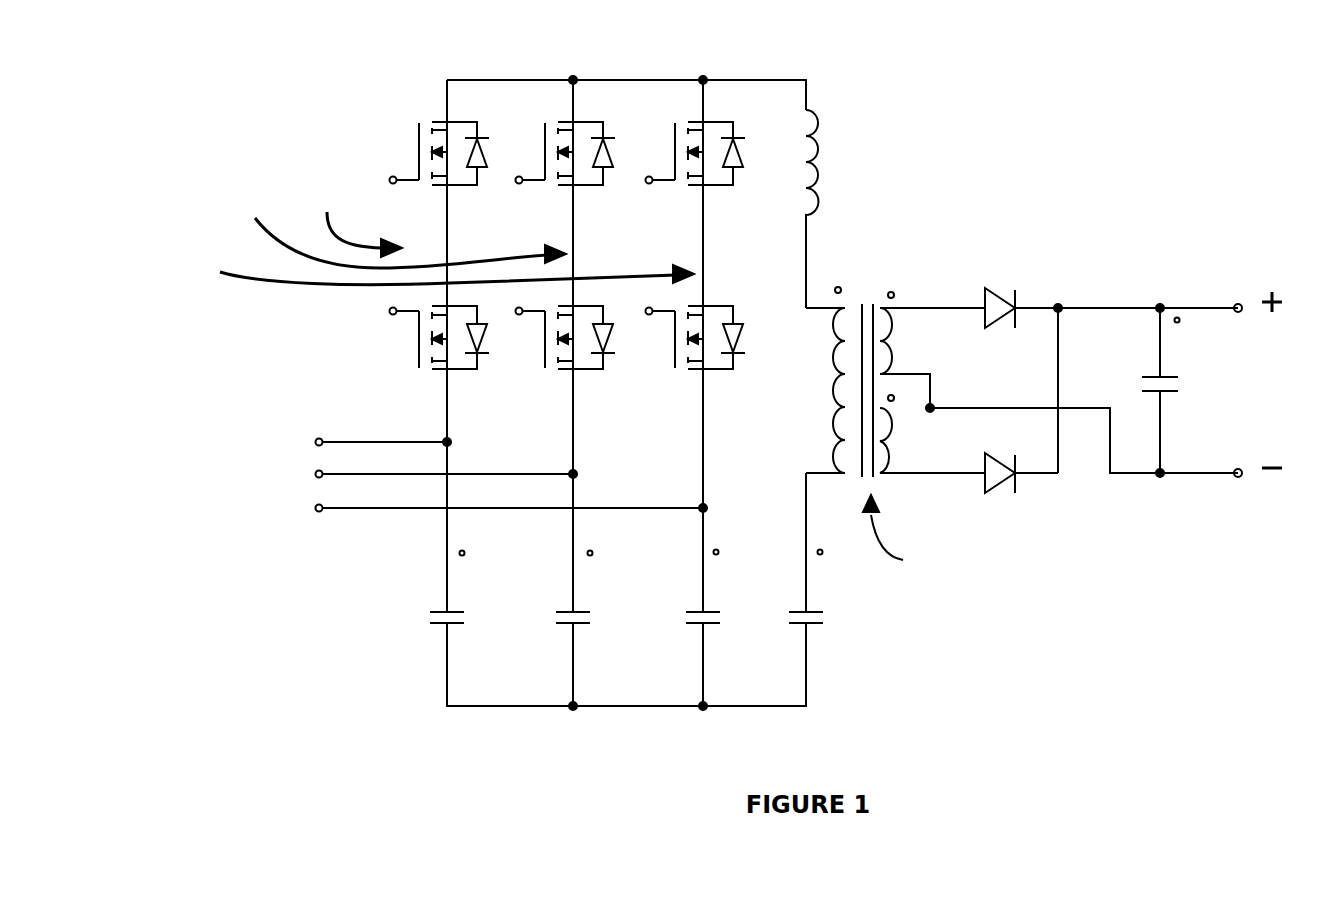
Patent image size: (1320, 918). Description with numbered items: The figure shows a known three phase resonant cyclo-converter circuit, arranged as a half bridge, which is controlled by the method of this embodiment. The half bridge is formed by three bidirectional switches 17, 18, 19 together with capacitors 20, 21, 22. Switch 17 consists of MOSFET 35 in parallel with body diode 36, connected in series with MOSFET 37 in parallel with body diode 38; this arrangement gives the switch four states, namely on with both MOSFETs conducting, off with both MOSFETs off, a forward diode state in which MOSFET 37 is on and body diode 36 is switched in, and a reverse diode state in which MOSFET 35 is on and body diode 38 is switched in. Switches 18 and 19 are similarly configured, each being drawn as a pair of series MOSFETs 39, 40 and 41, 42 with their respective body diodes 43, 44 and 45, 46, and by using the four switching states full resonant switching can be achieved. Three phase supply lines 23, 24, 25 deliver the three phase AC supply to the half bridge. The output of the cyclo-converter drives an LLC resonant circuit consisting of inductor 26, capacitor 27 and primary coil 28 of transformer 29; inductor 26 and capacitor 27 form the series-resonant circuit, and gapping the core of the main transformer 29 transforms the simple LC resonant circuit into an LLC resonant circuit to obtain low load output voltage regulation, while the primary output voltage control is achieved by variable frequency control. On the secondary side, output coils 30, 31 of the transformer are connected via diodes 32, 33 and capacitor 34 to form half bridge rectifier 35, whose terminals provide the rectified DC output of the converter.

The bidirectional switch 17 is at (356, 213).
The bidirectional switch 18 is at (397, 223).
The bidirectional switch 19 is at (434, 267).
The capacitor 20 is at (430, 640).
The capacitor 21 is at (568, 640).
The capacitor 22 is at (697, 640).
The three phase supply line 23 is at (355, 442).
The three phase supply line 24 is at (418, 474).
The three phase supply line 25 is at (483, 508).
The inductor 26 is at (850, 118).
The capacitor 27 is at (826, 637).
The primary coil 28 is at (843, 300).
The transformer 29 is at (903, 442).
The output coil 30 is at (895, 325).
The output coil 31 is at (898, 455).
The diode 32 is at (995, 290).
The diode 33 is at (1000, 498).
The capacitor 34 is at (1195, 385).
The MOSFET 35 is at (402, 135).
The body diode 36 is at (485, 128).
The MOSFET 37 is at (395, 345).
The body diode 38 is at (486, 365).
The second upper switch 39 is at (533, 122).
The second lower switch 40 is at (540, 352).
The third upper switch 41 is at (661, 115).
The third lower switch 42 is at (681, 375).
The body diode of second upper switch 43 is at (616, 122).
The body diode of second lower switch 44 is at (618, 365).
The body diode of third upper switch 45 is at (750, 145).
The body diode of third lower switch 46 is at (748, 340).